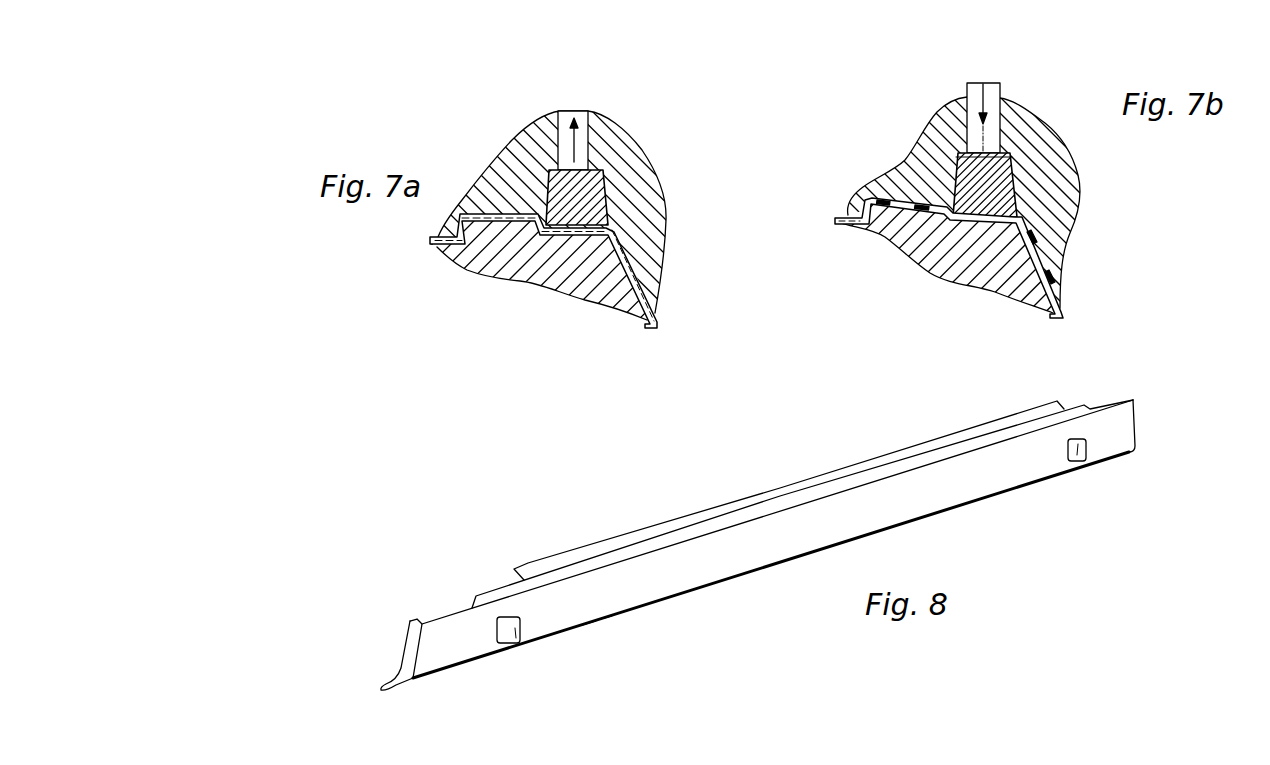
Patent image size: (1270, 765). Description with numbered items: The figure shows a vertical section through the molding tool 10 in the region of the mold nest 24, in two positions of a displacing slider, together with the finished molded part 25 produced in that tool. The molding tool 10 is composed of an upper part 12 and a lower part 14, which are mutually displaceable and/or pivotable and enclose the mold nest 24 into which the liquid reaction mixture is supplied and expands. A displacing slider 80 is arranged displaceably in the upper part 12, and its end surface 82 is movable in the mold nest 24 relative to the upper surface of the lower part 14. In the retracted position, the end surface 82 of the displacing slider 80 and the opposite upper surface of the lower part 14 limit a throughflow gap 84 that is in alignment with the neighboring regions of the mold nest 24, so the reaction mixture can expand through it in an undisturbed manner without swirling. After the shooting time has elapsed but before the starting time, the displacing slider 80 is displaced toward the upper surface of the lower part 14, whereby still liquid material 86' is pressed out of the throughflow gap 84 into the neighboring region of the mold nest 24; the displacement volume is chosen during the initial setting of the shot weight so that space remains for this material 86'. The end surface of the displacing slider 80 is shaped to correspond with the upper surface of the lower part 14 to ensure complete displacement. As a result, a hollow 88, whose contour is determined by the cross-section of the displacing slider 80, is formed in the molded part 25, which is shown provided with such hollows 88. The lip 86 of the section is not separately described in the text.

In FIG. 7A, the molding tool 10 is at (522, 141).
In FIG. 7B, the molding tool 10 is at (931, 134).
In FIG. 7A, the upper part 12 is at (613, 153).
In FIG. 7B, the upper part 12 is at (1063, 197).
In FIG. 7A, the lower part 14 is at (563, 273).
In FIG. 7B, the lower part 14 is at (953, 258).
In FIG. 7A, the mold nest 24 is at (490, 213).
In FIG. 7B, the mold nest 24 is at (905, 203).
In FIG. 7B, the molded part 25 is at (1055, 275).
In FIG. 8, the molded part 25 is at (683, 577).
In FIG. 7A, the displacing slider 80 is at (603, 187).
In FIG. 7B, the displacing slider 80 is at (1013, 167).
In FIG. 7A, the end surface 82 is at (527, 263).
In FIG. 7A, the throughflow gap 84 is at (607, 225).
In FIG. 7A, the trim lip 86 is at (678, 277).
In FIG. 7A, the still liquid material 86' is at (681, 255).
In FIG. 7B, the hollow 88 is at (992, 240).
In FIG. 8, the hollow 88 is at (517, 640).